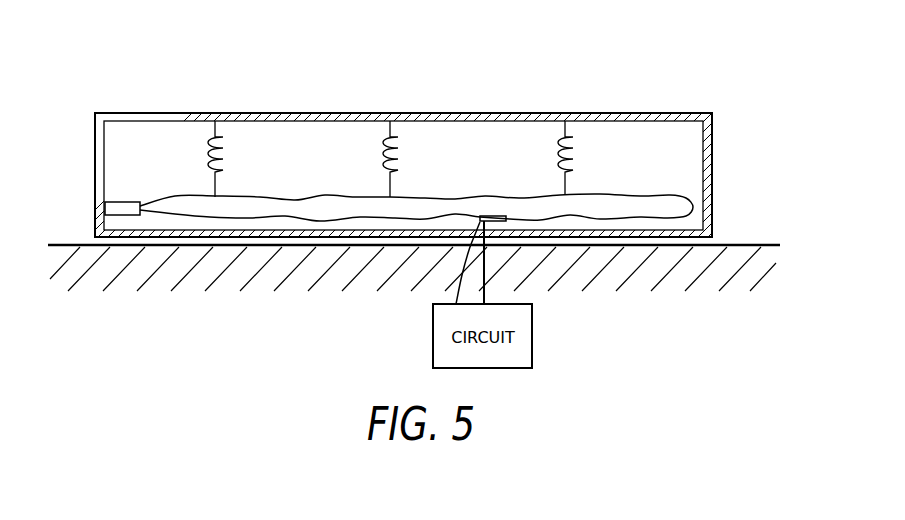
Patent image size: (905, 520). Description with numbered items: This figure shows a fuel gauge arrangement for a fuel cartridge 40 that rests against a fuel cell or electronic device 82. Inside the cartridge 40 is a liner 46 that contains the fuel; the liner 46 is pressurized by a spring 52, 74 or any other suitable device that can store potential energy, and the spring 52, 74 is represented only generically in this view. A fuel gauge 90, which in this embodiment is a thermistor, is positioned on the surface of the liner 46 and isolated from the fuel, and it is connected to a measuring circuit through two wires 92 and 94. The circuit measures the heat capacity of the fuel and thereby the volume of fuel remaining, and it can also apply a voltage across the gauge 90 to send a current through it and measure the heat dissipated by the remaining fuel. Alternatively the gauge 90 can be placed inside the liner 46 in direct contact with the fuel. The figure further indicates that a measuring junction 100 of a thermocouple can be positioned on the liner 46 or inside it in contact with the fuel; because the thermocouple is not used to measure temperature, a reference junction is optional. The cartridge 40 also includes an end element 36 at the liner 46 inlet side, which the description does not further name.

The cartridge 40 is at (679, 82).
The spring 52 is at (390, 131).
The spring 74 is at (225, 140).
The fuel gauge 90 is at (561, 143).
The measuring junction 100 is at (491, 216).
The inlet port 36 is at (117, 208).
The liner 46 is at (588, 206).
The wire 92 is at (458, 263).
The wire 94 is at (457, 281).
The fuel cell or electronic device 82 is at (115, 263).